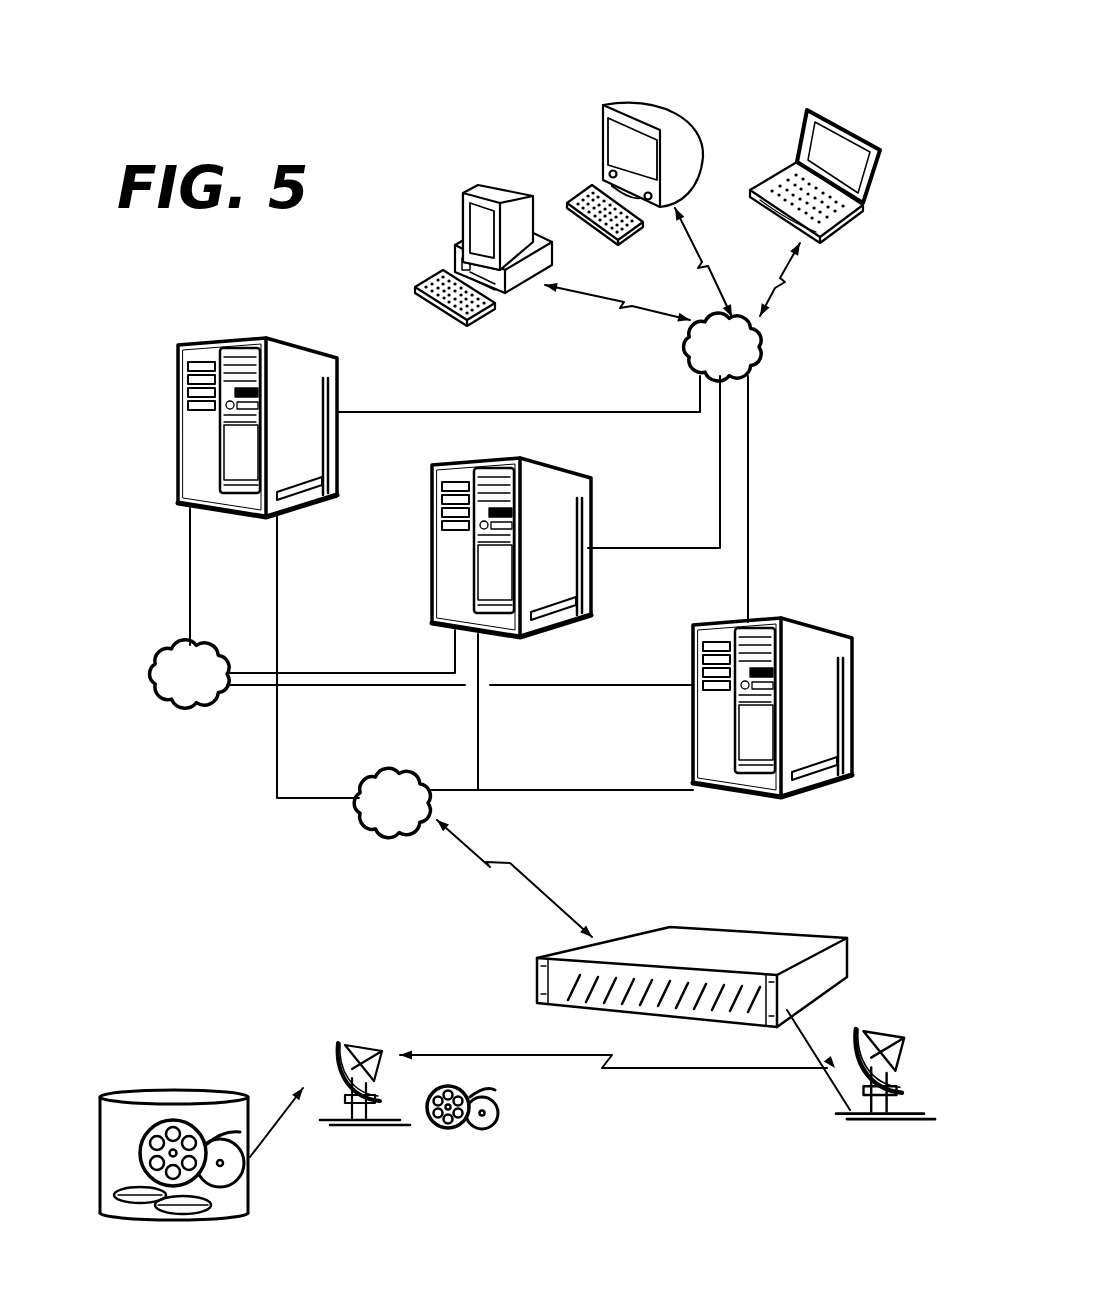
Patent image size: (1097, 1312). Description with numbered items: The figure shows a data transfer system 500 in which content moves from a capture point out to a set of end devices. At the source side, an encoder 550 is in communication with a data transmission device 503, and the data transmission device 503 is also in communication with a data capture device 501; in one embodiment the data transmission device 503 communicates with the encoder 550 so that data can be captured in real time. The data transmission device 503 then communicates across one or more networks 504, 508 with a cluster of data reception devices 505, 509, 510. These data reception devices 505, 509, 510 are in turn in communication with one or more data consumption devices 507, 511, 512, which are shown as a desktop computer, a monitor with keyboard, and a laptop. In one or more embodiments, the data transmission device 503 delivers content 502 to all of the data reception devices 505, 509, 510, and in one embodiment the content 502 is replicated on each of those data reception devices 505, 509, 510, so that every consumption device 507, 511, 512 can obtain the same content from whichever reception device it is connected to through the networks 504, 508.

The data transfer system 500 is at (858, 340).
The data capture device 501 is at (148, 1095).
The content 502 is at (450, 1128).
The data transmission device 503 is at (836, 880).
The network 504 is at (398, 912).
The data reception device 505 is at (850, 724).
The data consumption device 507 is at (600, 158).
The network 508 is at (160, 695).
The data reception device 509 is at (432, 545).
The data reception device 510 is at (178, 413).
The data consumption device 511 is at (755, 78).
The data consumption device 512 is at (453, 253).
The encoder 550 is at (337, 1037).